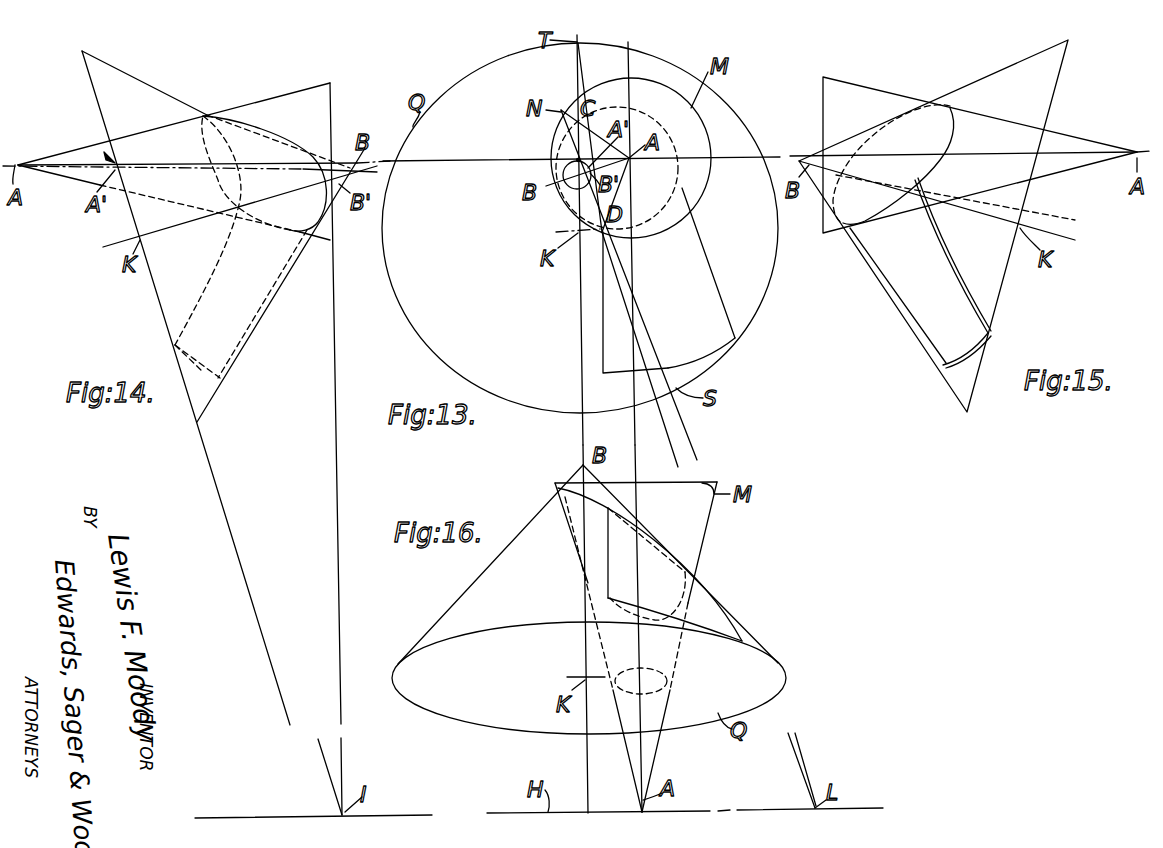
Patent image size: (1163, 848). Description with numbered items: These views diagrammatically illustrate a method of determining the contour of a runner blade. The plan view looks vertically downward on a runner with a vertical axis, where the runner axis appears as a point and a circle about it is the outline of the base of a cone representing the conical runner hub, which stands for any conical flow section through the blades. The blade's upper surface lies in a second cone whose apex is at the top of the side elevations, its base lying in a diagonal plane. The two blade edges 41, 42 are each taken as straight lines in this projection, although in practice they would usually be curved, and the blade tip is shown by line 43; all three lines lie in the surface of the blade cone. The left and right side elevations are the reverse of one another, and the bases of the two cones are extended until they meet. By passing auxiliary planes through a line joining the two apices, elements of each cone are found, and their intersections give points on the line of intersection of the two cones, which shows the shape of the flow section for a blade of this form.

In FIG. 14, the blade edge 41 is at (213, 268).
In FIG. 13, the blade edge 41 is at (710, 270).
In FIG. 15, the blade edge 41 is at (950, 262).
In FIG. 16, the blade edge 41 is at (732, 623).
In FIG. 14, the blade edge 42 is at (274, 298).
In FIG. 13, the blade edge 42 is at (603, 314).
In FIG. 15, the blade edge 42 is at (906, 316).
In FIG. 16, the blade edge 42 is at (610, 568).
In FIG. 14, the blade tip 43 is at (203, 372).
In FIG. 13, the blade tip 43 is at (720, 353).
In FIG. 15, the blade tip 43 is at (962, 352).
In FIG. 16, the blade tip 43 is at (652, 607).